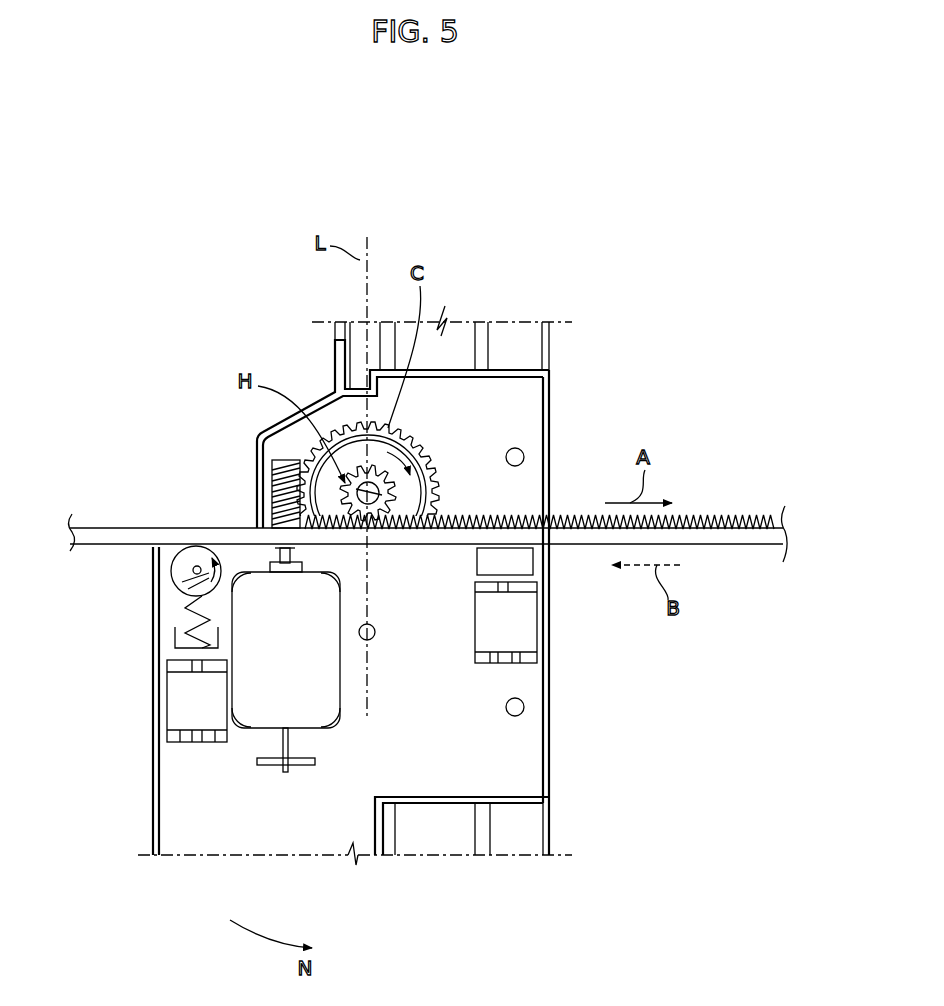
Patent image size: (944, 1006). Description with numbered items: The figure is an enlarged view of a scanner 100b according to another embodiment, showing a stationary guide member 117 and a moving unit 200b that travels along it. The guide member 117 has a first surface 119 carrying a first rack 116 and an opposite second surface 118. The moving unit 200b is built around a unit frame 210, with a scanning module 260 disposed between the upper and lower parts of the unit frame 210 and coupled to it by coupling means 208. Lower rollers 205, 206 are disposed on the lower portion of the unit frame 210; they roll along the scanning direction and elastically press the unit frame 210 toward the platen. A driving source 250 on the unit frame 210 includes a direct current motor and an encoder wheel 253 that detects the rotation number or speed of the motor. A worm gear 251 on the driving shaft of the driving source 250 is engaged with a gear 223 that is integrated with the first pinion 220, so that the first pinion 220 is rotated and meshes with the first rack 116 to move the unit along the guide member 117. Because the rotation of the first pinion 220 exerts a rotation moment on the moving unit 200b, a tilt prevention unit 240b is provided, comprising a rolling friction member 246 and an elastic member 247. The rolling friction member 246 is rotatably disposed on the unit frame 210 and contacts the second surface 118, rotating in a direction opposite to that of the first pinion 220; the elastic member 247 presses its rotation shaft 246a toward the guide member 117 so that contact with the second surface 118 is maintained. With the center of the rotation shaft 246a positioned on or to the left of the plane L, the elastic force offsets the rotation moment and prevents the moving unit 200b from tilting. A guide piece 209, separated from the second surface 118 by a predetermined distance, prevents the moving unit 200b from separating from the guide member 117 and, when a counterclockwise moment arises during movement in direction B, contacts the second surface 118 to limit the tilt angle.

The scanner 100b is at (580, 262).
The moving unit 200b is at (290, 372).
The unit frame 210 is at (552, 342).
The scanning module 260 is at (462, 343).
The coupling means 208 is at (524, 457).
The gear 223 is at (291, 460).
The first pinion 220 is at (342, 496).
The worm gear 251 is at (275, 508).
The first surface 119 is at (157, 527).
The first rack 116 is at (710, 518).
The guide member 117 is at (768, 535).
The second surface 118 is at (745, 543).
The guide piece 209 is at (530, 562).
The lower roller 206 is at (527, 630).
The rotation shaft 246a is at (193, 571).
The rolling friction member 246 is at (183, 586).
The tilt prevention unit 240b is at (104, 593).
The elastic member 247 is at (185, 630).
The driving source 250 is at (248, 692).
The lower roller 205 is at (177, 715).
The encoder wheel 253 is at (268, 765).